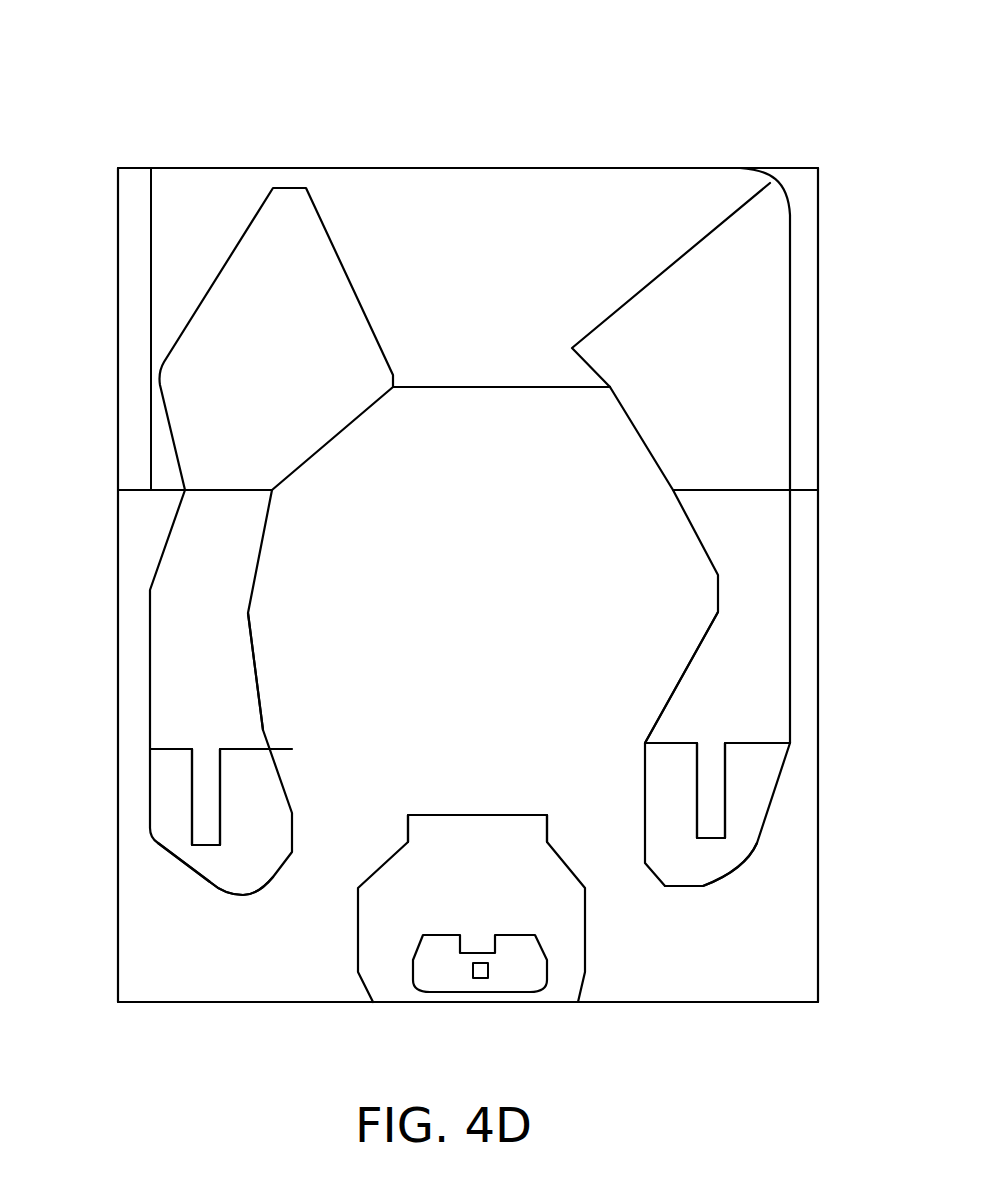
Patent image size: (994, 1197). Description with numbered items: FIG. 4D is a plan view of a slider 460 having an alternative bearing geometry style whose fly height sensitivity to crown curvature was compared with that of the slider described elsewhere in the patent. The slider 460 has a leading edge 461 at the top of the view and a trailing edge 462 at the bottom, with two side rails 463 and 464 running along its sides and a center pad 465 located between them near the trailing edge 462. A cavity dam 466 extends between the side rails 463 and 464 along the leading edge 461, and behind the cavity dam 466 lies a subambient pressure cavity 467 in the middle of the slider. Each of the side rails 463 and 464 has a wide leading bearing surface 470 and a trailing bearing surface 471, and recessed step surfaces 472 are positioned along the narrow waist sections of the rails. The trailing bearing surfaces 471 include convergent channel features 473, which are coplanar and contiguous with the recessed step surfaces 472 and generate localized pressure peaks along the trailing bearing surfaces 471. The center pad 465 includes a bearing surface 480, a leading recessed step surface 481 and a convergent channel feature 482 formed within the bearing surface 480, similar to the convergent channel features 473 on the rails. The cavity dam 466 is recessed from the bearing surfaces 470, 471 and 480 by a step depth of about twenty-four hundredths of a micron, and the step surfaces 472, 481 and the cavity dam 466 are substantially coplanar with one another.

The slider 460 is at (274, 96).
The leading edge 461 is at (428, 168).
The trailing edge 462 is at (330, 1002).
The side rail 463 is at (152, 538).
The side rail 464 is at (802, 553).
The center pad 465 is at (506, 804).
The cavity dam 466 is at (525, 197).
The subambient pressure cavity 467 is at (497, 498).
The leading bearing surface 470 is at (270, 302).
The trailing bearing surface 471 is at (168, 821).
The recessed step surface 472 is at (188, 670).
The convergent channel feature 473 is at (243, 820).
The bearing surface 480 is at (528, 963).
The leading recessed step surface 481 is at (470, 838).
The convergent channel feature 482 is at (458, 945).